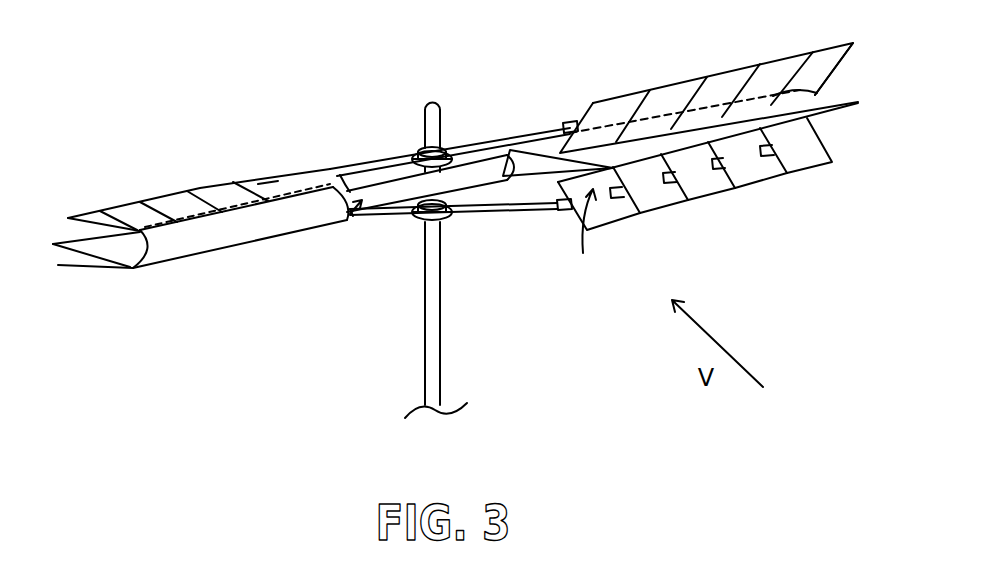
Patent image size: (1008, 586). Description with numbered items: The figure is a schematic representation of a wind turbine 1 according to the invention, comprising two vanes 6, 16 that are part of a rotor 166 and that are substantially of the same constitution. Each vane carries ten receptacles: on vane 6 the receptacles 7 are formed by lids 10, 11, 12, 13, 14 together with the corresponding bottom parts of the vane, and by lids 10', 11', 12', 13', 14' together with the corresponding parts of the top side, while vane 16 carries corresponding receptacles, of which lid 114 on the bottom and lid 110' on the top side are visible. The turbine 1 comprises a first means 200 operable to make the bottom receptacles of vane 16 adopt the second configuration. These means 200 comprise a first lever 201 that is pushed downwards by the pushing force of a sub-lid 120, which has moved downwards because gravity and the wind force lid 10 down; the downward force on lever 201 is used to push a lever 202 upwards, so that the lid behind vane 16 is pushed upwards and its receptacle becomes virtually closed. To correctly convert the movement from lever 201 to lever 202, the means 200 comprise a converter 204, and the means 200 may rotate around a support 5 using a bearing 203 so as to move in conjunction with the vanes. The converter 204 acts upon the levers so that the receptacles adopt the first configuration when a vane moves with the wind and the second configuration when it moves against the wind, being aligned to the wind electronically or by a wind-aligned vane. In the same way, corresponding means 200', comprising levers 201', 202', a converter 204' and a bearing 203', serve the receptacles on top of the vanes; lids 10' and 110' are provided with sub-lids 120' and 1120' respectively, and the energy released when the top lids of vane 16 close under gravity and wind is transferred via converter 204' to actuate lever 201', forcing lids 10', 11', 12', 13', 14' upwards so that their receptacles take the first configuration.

The wind turbine 1 is at (412, 61).
The support 5 is at (443, 350).
The vane 6 is at (856, 105).
The receptacles 7 is at (585, 242).
The lid 10 is at (602, 208).
The lid 11 is at (672, 194).
The lid 12 is at (723, 182).
The lid 13 is at (772, 171).
The lid 14 is at (823, 158).
The lid 10' is at (626, 95).
The lid 11' is at (684, 85).
The lid 12' is at (741, 73).
The lid 13' is at (792, 61).
The lid 14' is at (840, 51).
The vane 16 is at (131, 269).
The lid 110' is at (199, 182).
The sub-lid 1120' is at (299, 158).
The lid 114 is at (72, 217).
The sub-lid 120 is at (556, 231).
The sub-lid 120' is at (562, 106).
The rotor 166 is at (338, 232).
The first means 200 is at (450, 239).
The corresponding means 200' is at (468, 126).
The first lever 201 is at (453, 226).
The lever 201' is at (450, 142).
The lever 202 is at (371, 229).
The lever 202' is at (368, 160).
The bearing 203 is at (462, 196).
The bearing 203' is at (451, 123).
The converter 204 is at (411, 254).
The converter 204' is at (410, 130).